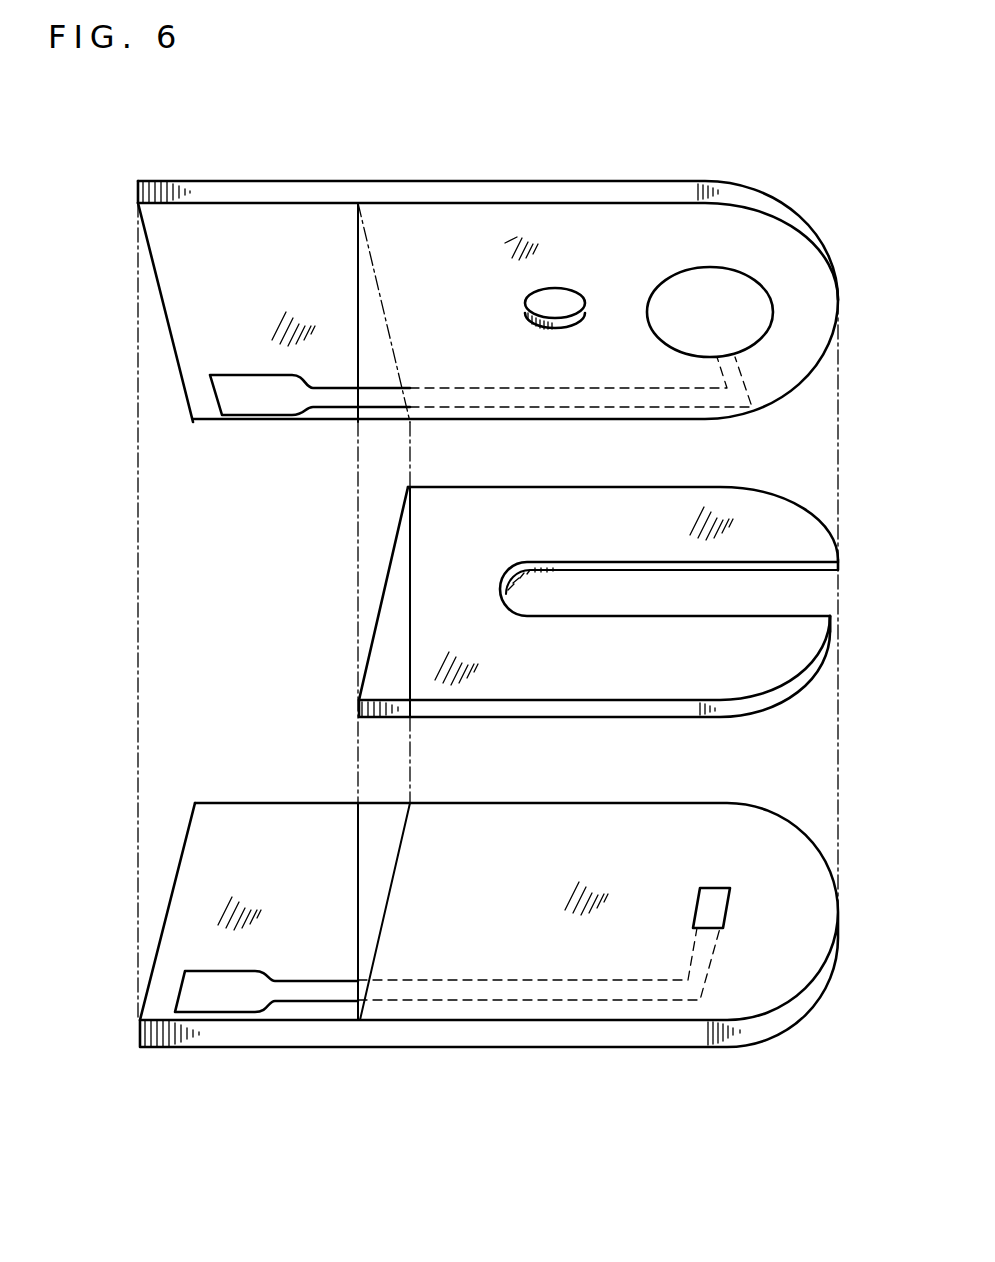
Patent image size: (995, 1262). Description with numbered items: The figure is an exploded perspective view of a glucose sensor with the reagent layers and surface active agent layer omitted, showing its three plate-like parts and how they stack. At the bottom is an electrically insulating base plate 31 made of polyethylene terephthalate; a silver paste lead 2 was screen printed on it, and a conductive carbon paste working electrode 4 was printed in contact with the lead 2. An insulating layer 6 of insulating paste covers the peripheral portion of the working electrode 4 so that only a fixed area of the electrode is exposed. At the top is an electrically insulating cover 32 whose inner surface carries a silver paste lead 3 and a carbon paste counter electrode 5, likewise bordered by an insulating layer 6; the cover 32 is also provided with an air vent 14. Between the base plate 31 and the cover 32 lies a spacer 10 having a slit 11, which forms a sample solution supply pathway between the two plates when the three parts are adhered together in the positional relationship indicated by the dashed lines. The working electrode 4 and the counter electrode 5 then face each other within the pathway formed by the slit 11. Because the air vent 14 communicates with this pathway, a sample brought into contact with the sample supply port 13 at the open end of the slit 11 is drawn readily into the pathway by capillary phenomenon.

The lead 2 is at (232, 1002).
The lead 3 is at (234, 390).
The working electrode 4 is at (710, 908).
The counter electrode 5 is at (717, 290).
The insulating layer 6 is at (466, 222).
The spacer 10 is at (765, 533).
The slit 11 is at (643, 598).
The sample supply port 13 is at (820, 593).
The air vent 14 is at (553, 306).
The base plate 31 is at (163, 1008).
The cover 32 is at (287, 230).